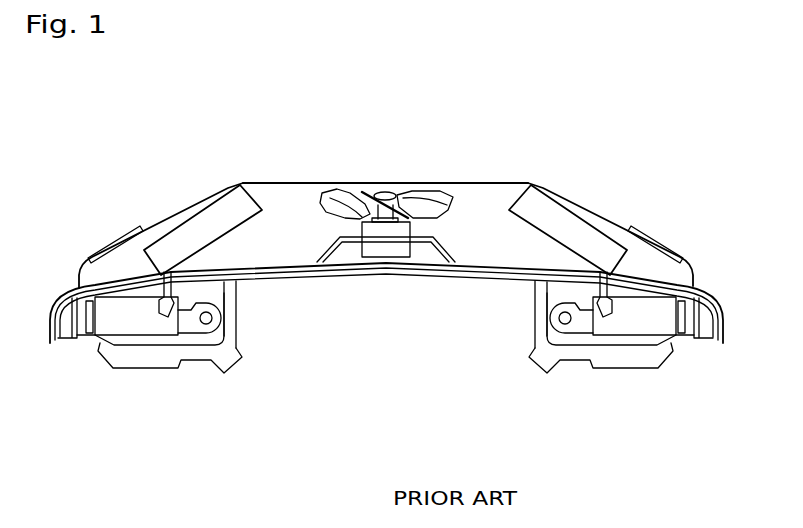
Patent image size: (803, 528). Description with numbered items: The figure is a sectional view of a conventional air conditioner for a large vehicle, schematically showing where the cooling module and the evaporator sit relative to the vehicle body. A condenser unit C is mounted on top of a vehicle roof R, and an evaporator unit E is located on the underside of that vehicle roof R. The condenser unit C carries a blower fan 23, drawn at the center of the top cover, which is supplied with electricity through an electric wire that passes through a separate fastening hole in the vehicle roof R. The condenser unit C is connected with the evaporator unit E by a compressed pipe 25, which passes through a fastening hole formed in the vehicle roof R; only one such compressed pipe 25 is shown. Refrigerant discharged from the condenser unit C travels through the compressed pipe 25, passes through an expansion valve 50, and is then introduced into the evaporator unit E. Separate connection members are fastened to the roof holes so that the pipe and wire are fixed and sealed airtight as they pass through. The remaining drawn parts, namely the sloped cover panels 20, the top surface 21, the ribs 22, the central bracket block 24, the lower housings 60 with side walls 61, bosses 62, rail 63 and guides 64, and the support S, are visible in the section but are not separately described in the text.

The cover panel 20 is at (192, 228).
The top surface of cover 21 is at (475, 182).
The rib 22 is at (112, 238).
The blower fan 23 is at (349, 205).
The bracket block 24 is at (383, 248).
The compressed pipe 25 is at (547, 297).
The expansion valve 50 is at (612, 287).
The housing 60 is at (633, 325).
The side wall 61 is at (712, 324).
The boss 62 is at (580, 328).
The rail 63 is at (724, 299).
The guide 64 is at (686, 322).
The condenser unit C is at (283, 167).
The vehicle roof R is at (702, 284).
The support S is at (535, 320).
The evaporator unit E is at (681, 352).